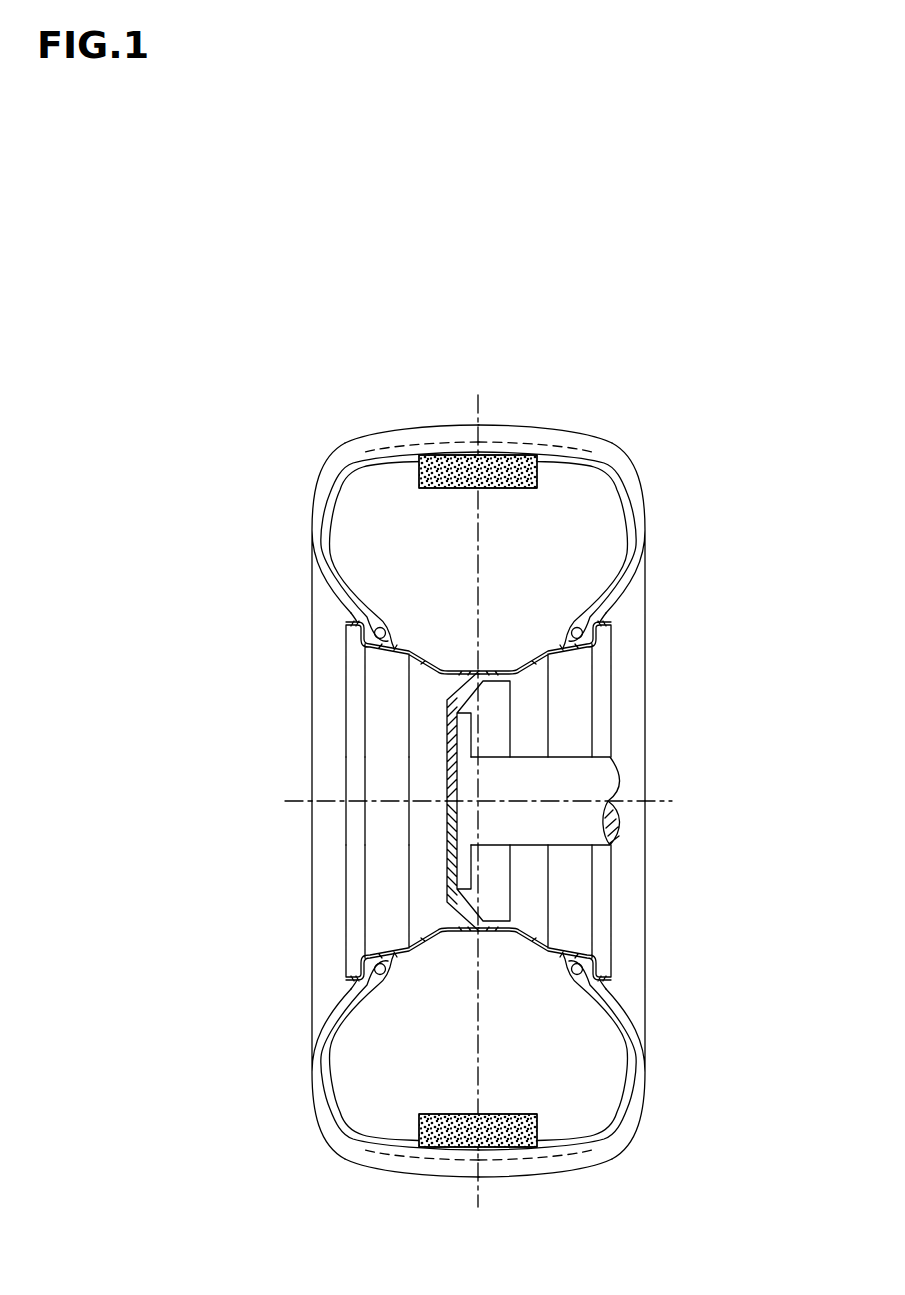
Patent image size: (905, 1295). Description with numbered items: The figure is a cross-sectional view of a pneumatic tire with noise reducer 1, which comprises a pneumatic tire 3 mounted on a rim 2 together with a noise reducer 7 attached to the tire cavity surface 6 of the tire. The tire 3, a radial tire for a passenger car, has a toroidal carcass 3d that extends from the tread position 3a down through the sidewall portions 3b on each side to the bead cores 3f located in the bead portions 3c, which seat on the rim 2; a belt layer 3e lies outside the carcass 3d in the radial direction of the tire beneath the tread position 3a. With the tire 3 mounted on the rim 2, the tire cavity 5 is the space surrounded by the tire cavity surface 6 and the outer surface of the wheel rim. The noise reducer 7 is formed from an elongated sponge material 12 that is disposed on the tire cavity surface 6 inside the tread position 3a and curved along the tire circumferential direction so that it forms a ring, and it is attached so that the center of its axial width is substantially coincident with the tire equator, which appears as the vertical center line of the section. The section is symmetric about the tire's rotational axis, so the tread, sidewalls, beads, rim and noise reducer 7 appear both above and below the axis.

The pneumatic tire with noise reducer 1 is at (635, 279).
The rim 2 is at (425, 678).
The pneumatic tire 3 is at (621, 378).
The tread position 3a is at (413, 419).
The sidewall portions 3b is at (288, 527).
The bead portions 3c is at (365, 646).
The carcass 3d is at (352, 468).
The belt layer 3e is at (570, 448).
The bead cores 3f is at (370, 631).
The tire cavity 5 is at (552, 566).
The tire cavity surface 6 is at (641, 492).
The noise reducer 7 is at (495, 737).
The elongated sponge material 12 is at (514, 467).